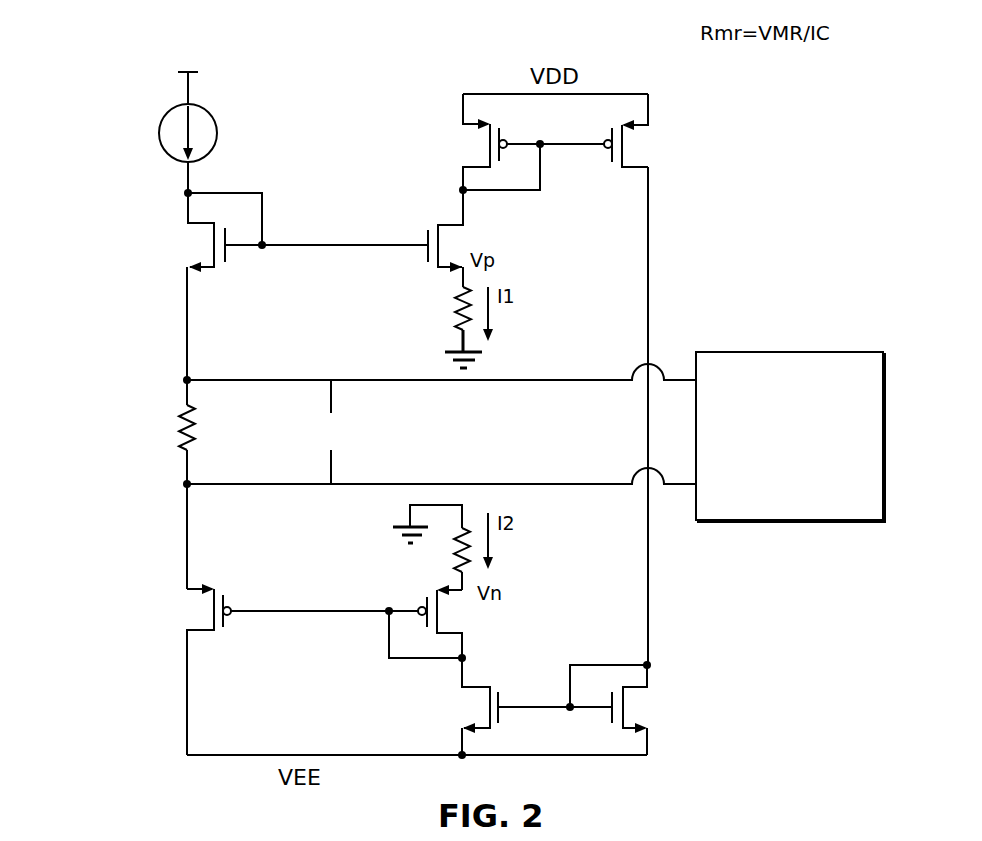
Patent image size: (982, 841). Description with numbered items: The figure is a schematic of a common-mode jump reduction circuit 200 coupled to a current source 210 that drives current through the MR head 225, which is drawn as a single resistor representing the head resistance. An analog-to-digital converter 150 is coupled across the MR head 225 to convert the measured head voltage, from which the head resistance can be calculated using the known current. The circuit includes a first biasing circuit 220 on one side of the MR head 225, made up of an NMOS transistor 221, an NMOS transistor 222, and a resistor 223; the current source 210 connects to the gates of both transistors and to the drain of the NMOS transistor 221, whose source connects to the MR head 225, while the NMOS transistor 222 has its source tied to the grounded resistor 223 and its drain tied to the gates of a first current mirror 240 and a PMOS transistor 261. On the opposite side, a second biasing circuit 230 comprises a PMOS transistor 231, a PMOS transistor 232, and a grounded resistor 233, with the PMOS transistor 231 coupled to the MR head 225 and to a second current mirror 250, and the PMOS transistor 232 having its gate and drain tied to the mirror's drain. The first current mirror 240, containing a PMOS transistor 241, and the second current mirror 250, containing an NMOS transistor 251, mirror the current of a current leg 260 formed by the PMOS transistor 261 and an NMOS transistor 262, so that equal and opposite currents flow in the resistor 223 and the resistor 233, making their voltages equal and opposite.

The analog-to-digital converter 150 is at (795, 352).
The CM jump reduction circuit 200 is at (113, 398).
The current source 210 is at (160, 133).
The first biasing circuit 220 is at (160, 298).
The NMOS transistor 221 is at (192, 238).
The NMOS transistor 222 is at (455, 240).
The resistor 223 is at (448, 305).
The MR head 225 is at (172, 430).
The second biasing circuit 230 is at (156, 665).
The PMOS transistor 231 is at (197, 602).
The PMOS transistor 232 is at (450, 618).
The resistor 233 is at (450, 555).
The first current mirror 240 is at (436, 155).
The PMOS transistor 241 is at (473, 142).
The second current mirror 250 is at (428, 686).
The NMOS transistor 251 is at (467, 712).
The current leg 260 is at (662, 237).
The PMOS transistor 261 is at (640, 144).
The NMOS transistor 262 is at (643, 715).